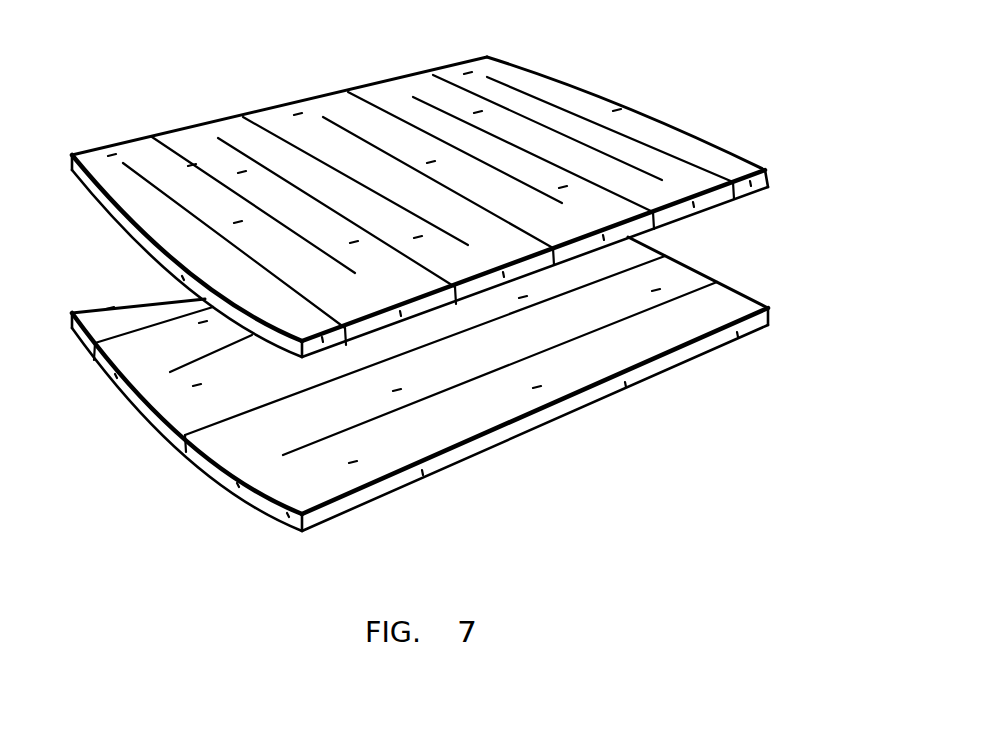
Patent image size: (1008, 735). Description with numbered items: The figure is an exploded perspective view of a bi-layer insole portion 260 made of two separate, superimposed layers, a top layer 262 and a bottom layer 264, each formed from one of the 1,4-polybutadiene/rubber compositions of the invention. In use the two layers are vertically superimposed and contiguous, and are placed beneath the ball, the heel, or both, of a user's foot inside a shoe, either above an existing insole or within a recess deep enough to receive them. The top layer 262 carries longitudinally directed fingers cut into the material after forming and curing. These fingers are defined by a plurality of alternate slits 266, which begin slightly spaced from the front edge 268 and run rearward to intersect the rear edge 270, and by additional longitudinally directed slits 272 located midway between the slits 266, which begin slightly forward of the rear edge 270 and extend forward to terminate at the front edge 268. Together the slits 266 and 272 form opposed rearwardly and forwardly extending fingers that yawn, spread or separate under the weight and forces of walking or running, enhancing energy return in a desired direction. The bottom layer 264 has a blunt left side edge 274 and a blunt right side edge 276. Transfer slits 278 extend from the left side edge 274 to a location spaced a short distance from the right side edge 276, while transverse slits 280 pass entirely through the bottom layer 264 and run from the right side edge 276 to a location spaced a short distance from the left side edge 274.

The bi-layer insole portion 260 is at (785, 225).
The top layer 262 is at (327, 78).
The bottom layer 264 is at (579, 426).
The alternate slits 266 is at (688, 162).
The front edge 268 is at (115, 143).
The rear edge 270 is at (410, 315).
The additional longitudinally directed slits 272 is at (458, 82).
The blunt left side edge 274 is at (167, 433).
The blunt right side edge 276 is at (704, 275).
The transfer slits 278 is at (110, 345).
The transverse slits 280 is at (170, 372).